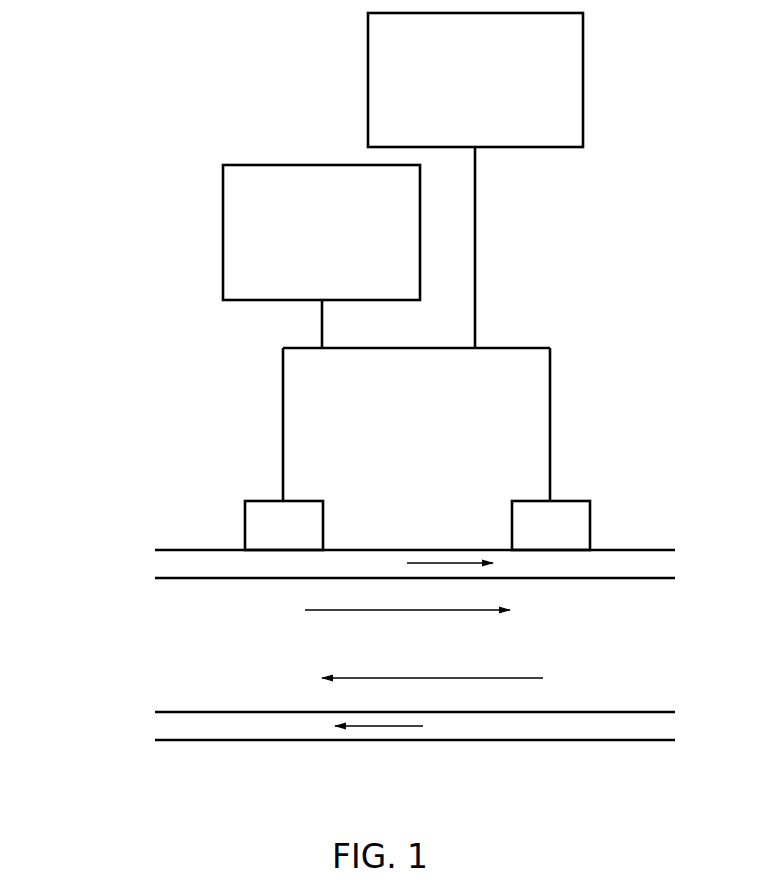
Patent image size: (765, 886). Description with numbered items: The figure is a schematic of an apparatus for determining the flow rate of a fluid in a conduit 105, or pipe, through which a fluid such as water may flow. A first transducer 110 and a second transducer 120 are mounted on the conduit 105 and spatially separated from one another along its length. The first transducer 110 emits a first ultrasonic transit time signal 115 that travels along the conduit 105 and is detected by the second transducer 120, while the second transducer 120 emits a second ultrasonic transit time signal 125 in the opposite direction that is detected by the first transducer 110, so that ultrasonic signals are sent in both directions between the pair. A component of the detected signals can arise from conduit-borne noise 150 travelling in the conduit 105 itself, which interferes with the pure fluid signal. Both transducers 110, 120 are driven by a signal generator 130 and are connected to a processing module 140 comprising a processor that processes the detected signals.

The conduit 105 is at (157, 563).
The first transducer 110 is at (245, 528).
The first ultrasonic transit time signal 115 is at (410, 612).
The second transducer 120 is at (592, 532).
The second ultrasonic transit time signal 125 is at (505, 680).
The signal generator 130 is at (235, 245).
The processing module 140 is at (568, 88).
The conduit-borne noise 150 is at (450, 563).